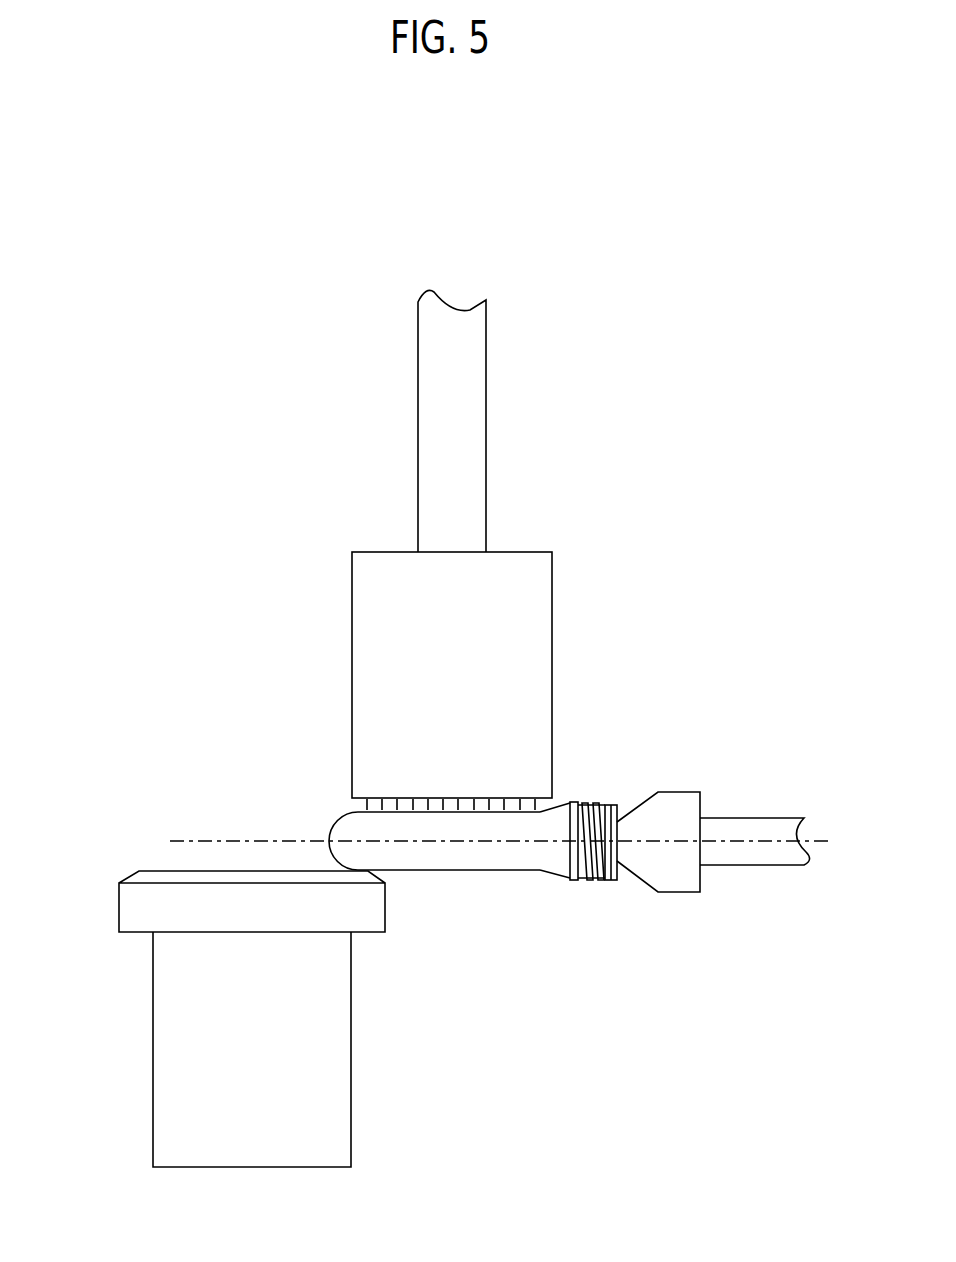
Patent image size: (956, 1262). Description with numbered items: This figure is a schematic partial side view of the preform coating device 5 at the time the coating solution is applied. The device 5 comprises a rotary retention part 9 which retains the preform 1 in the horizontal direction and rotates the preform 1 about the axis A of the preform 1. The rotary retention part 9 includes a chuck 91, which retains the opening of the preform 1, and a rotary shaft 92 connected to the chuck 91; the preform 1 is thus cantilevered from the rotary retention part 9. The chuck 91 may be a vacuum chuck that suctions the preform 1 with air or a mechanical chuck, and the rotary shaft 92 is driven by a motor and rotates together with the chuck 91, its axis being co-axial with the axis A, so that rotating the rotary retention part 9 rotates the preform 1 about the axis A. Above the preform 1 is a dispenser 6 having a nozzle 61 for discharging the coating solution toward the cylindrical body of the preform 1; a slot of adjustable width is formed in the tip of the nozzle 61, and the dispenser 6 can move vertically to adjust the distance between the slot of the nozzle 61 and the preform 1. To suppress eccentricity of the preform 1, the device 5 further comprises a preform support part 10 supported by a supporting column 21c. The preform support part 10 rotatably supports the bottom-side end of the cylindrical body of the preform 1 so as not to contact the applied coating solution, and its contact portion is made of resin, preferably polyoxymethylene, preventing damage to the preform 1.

The preform coating device 5 is at (174, 386).
The dispenser 6 is at (531, 437).
The nozzle 61 is at (552, 618).
The preform 1 is at (480, 871).
The rotary retention part 9 is at (740, 790).
The chuck 91 is at (680, 893).
The rotary shaft 92 is at (771, 866).
The preform support part 10 is at (118, 908).
The supporting column 21c is at (351, 1112).
The axis A is at (227, 841).